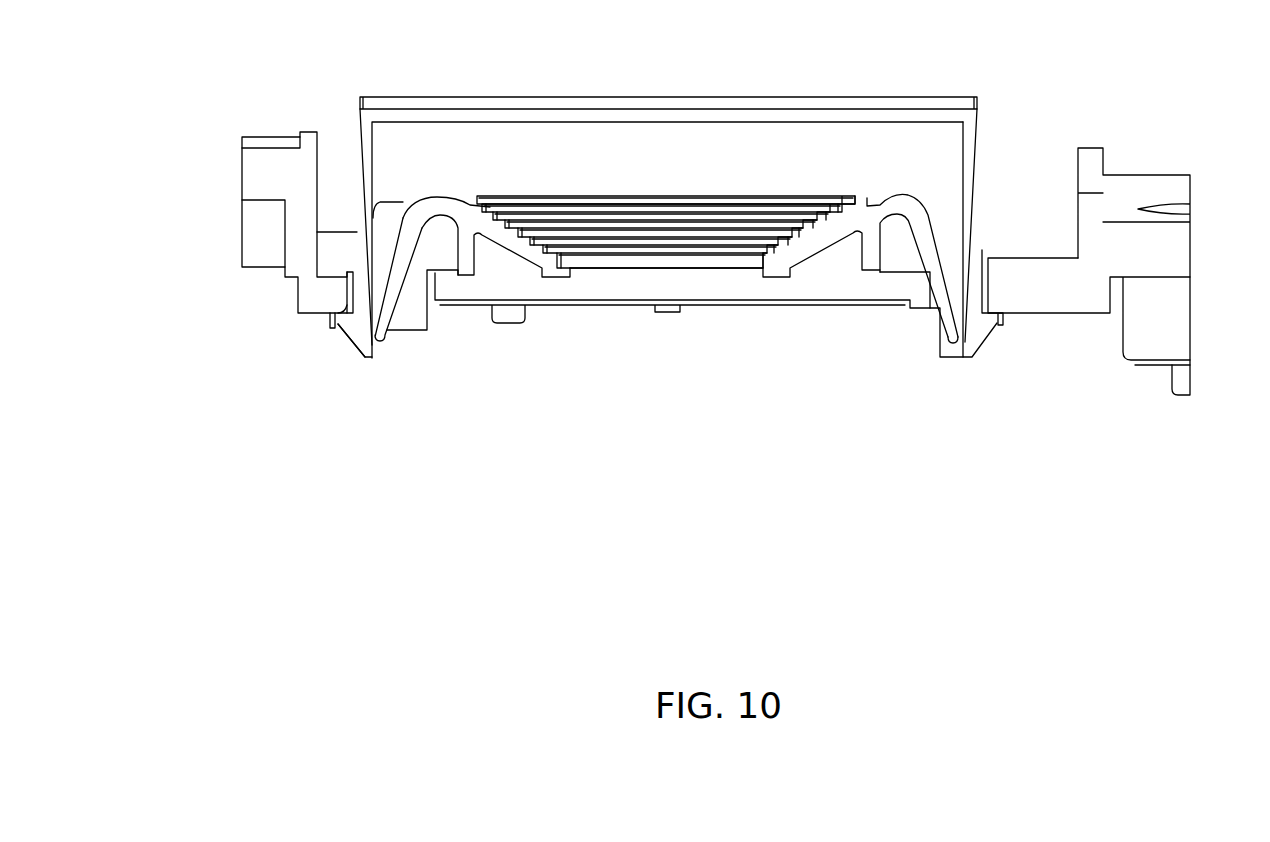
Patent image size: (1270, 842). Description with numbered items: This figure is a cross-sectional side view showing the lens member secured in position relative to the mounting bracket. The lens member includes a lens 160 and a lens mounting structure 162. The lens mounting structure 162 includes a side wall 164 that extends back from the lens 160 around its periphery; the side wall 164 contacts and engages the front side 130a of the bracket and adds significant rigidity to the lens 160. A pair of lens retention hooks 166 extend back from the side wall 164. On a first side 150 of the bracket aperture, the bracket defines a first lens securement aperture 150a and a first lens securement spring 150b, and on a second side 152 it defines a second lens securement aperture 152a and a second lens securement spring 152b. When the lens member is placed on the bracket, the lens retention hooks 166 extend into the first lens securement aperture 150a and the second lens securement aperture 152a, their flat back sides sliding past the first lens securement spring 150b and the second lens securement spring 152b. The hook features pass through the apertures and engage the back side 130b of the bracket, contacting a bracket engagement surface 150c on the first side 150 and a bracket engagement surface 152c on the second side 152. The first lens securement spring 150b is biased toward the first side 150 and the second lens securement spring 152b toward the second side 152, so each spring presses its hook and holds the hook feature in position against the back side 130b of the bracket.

The front side of the bracket 130a is at (245, 128).
The back side of the bracket 130b is at (333, 378).
The first side of the aperture 150 is at (385, 234).
The first lens securement aperture 150a is at (392, 198).
The first lens securement spring 150b is at (402, 280).
The bracket engagement surface 150c is at (343, 312).
The second side of the aperture 152 is at (995, 229).
The second lens securement aperture 152a is at (950, 232).
The second lens securement spring 152b is at (942, 312).
The bracket engagement surface 152c is at (1005, 302).
The lens 160 is at (668, 96).
The lens mounting structure 162 is at (357, 90).
The side wall 164 is at (975, 130).
The lens retention hooks 166 is at (362, 201).